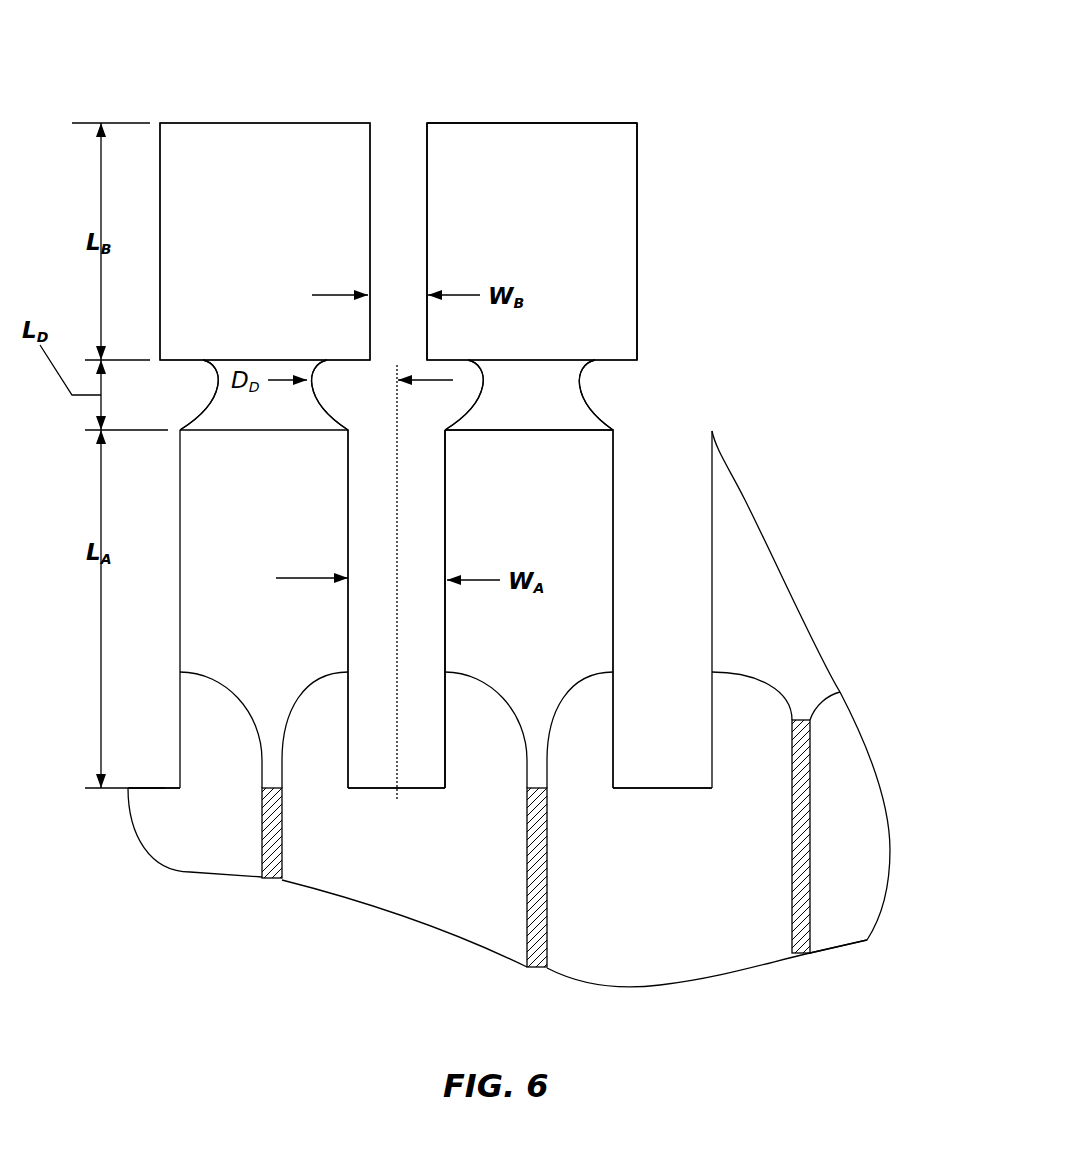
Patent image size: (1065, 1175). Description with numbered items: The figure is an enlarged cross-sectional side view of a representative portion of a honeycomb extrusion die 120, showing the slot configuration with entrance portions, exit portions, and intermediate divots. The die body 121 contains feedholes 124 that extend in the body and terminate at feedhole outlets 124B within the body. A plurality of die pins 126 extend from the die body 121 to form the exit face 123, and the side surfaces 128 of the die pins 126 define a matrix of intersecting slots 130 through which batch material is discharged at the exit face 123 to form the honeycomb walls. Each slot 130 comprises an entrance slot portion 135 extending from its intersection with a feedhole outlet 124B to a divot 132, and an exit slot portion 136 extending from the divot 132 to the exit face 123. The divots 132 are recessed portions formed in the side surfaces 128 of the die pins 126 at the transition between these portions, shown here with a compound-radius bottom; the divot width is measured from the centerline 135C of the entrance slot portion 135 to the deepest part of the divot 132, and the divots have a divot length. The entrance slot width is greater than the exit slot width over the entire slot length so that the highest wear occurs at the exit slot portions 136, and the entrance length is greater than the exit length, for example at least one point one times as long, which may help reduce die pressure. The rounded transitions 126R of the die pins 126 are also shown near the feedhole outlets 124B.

The honeycomb extrusion die 120 is at (201, 65).
The die body 121 is at (270, 880).
The exit face 123 is at (553, 123).
The feedholes 124 is at (288, 850).
The feedhole outlets 124B is at (155, 792).
The die pins 126 is at (283, 254).
The rounded corner 126R is at (345, 790).
The side surfaces 128 is at (427, 140).
The intersecting slots 130 is at (397, 123).
The divots 132 is at (322, 397).
The entrance slot portions 135 is at (448, 473).
The centerline 135C is at (397, 521).
The exit slot portions 136 is at (428, 187).